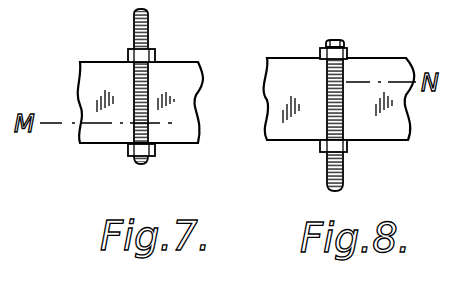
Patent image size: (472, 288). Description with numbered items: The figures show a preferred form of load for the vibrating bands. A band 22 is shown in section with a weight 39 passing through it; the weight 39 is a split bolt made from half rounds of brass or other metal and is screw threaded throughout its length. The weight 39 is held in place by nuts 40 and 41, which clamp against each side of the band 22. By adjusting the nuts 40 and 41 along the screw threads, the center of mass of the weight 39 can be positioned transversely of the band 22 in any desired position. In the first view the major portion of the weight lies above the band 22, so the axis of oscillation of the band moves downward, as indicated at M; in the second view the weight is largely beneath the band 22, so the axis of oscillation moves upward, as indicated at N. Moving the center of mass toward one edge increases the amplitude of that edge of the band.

In FIG. 7, the band 22 is at (94, 90).
In FIG. 8, the band 22 is at (392, 63).
In FIG. 7, the weight 39 is at (135, 26).
In FIG. 8, the weight 39 is at (344, 173).
In FIG. 7, the nut 40 is at (156, 54).
In FIG. 8, the nut 40 is at (321, 150).
In FIG. 7, the nut 41 is at (156, 150).
In FIG. 8, the nut 41 is at (321, 52).